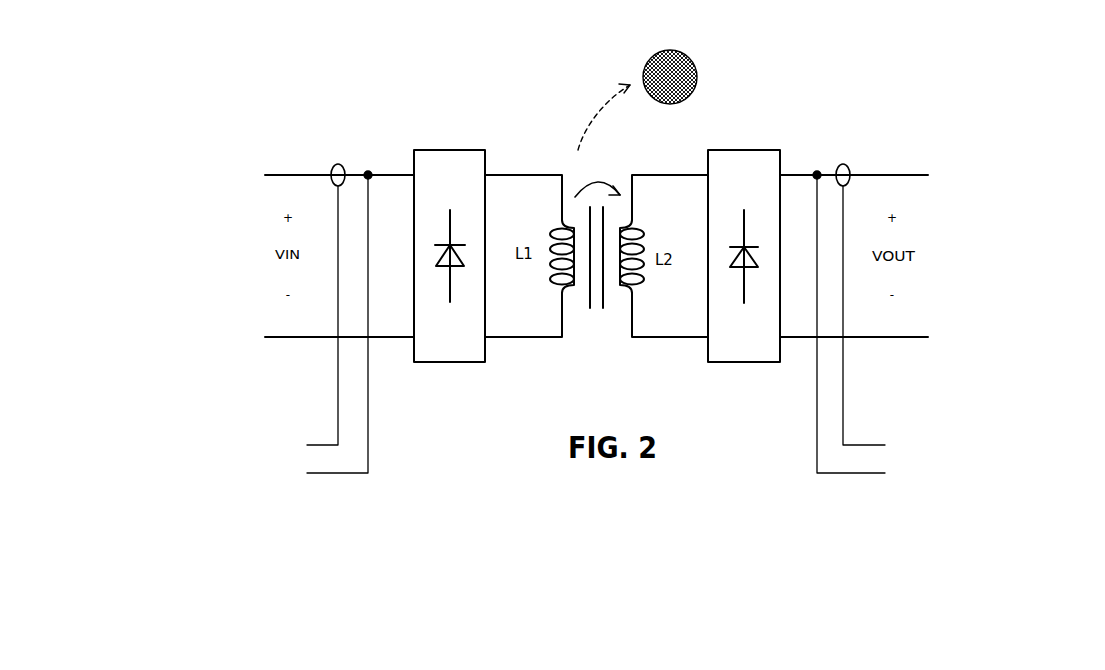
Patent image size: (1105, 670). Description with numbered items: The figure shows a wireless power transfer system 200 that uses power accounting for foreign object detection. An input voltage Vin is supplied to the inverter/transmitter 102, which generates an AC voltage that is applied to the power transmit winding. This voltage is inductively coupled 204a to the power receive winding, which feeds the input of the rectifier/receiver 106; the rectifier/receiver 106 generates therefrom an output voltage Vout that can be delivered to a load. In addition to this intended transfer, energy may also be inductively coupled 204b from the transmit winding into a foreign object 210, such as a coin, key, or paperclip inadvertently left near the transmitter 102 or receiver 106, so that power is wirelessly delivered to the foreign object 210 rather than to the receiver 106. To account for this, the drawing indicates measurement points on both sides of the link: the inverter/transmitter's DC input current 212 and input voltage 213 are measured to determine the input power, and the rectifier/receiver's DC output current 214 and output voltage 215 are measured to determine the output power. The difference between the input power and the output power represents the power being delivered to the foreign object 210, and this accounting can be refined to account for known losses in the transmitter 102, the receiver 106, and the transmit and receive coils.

The wireless power transfer system 200 is at (440, 62).
The inverter/transmitter 102 is at (460, 366).
The rectifier/receiver 106 is at (752, 364).
The inductive coupling 204a is at (600, 183).
The inductive coupling to foreign object 204b is at (597, 107).
The foreign object 210 is at (656, 50).
The DC input current 212 is at (335, 163).
The DC input voltage 213 is at (367, 171).
The DC output current 214 is at (846, 164).
The DC output voltage 215 is at (817, 171).